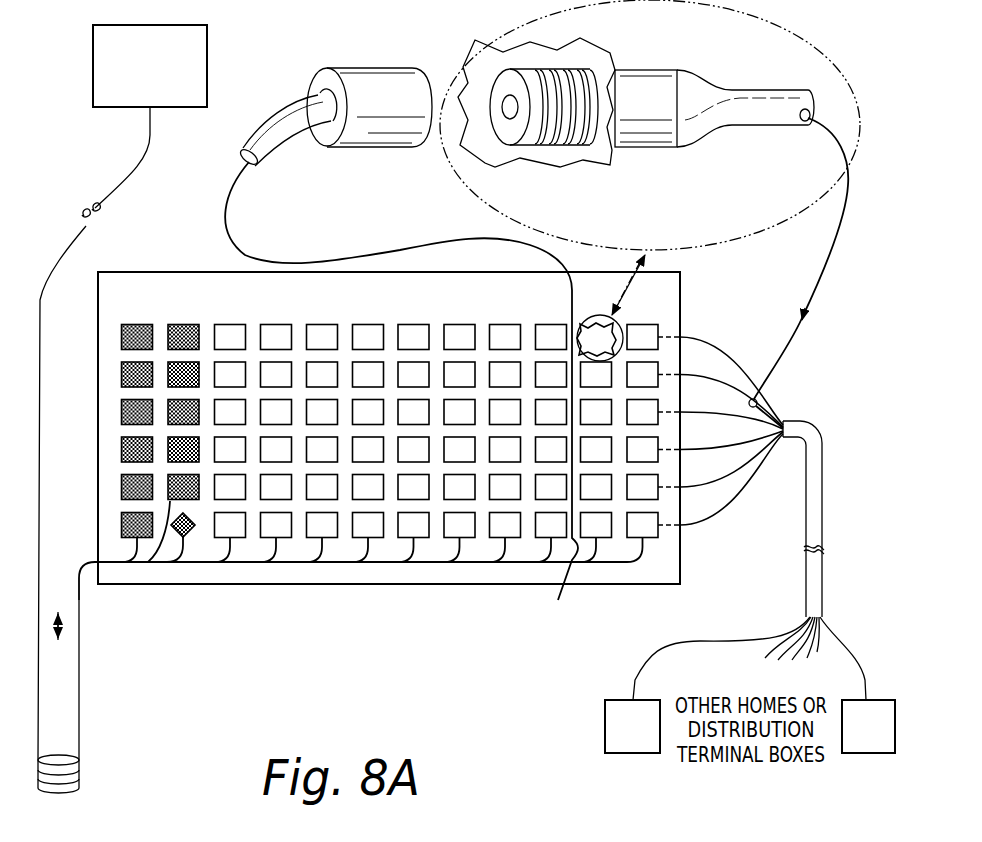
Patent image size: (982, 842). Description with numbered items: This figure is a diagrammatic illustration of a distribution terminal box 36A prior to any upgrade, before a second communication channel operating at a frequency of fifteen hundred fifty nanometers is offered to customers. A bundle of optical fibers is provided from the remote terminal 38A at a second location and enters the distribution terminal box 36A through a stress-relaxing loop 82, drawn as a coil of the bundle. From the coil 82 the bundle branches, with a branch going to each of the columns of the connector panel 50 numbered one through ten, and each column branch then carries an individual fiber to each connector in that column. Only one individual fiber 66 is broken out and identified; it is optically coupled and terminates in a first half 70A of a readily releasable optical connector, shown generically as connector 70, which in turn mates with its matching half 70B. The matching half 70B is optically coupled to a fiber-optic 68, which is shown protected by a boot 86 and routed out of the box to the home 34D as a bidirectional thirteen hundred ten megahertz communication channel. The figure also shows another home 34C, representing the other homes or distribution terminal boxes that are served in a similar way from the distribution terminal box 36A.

The remote terminal 38A is at (207, 66).
The first half of readily releasable optical connector 70A is at (362, 82).
The readily releasable optical connector 70 is at (429, 125).
The matching half of readily releasable optical connector 70B is at (548, 125).
The cable boot 86 is at (650, 127).
The fiber 66 is at (233, 232).
The fiber-optic 68 is at (810, 290).
The LGX distribution panel 50 is at (282, 577).
The distribution terminal box 36A is at (378, 453).
The stress-relaxing loop 82 is at (80, 772).
The home 34C is at (605, 727).
The home 34D is at (860, 740).